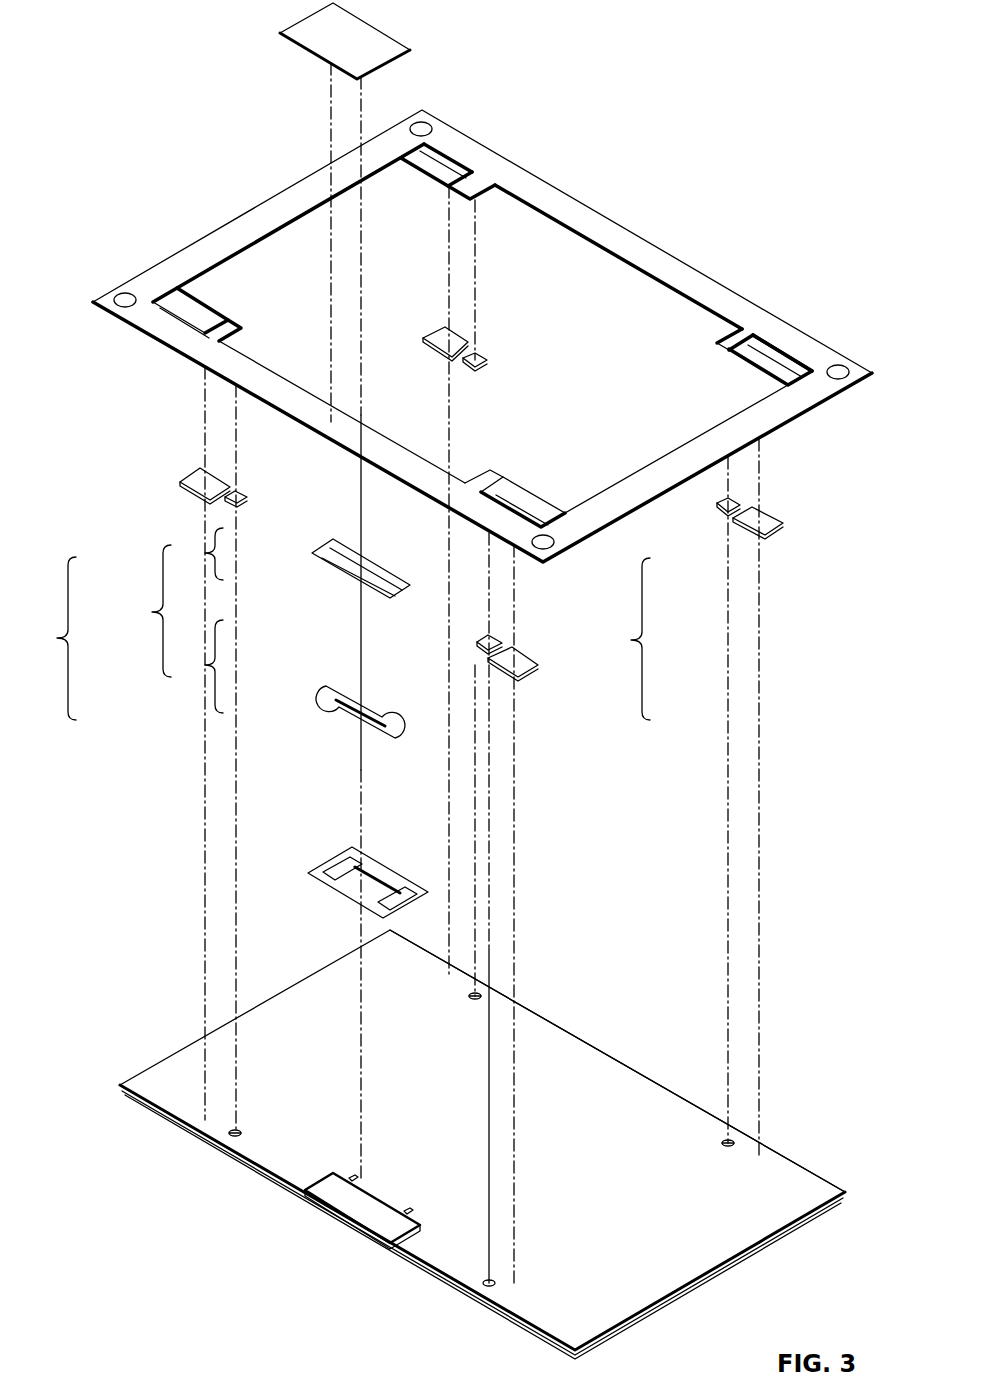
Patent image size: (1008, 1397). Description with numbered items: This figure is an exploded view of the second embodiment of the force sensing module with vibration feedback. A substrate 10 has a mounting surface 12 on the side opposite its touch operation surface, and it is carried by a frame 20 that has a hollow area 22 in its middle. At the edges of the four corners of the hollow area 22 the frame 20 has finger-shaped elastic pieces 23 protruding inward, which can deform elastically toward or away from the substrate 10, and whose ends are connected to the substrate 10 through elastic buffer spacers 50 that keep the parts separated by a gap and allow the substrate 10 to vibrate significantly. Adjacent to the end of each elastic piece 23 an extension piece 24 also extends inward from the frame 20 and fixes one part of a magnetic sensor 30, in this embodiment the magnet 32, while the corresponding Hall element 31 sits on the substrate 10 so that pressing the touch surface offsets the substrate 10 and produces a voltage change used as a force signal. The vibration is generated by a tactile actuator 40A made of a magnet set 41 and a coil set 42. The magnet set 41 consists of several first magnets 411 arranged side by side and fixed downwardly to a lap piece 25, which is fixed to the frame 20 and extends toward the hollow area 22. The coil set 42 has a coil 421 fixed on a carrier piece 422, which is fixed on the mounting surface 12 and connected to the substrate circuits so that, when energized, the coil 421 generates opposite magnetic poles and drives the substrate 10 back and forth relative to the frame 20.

The substrate 10 is at (150, 1110).
The mounting surface 12 is at (787, 1182).
The frame 20 is at (633, 250).
The hollow area 22 is at (258, 287).
The elastic piece 23 is at (440, 170).
The extension piece 24 is at (482, 190).
The lap piece 25 is at (308, 38).
The magnetic sensor 30 is at (336, 638).
The Hall element 31 is at (236, 800).
The magnet 32 is at (200, 480).
The tactile actuator 40A is at (136, 611).
The magnet set 41 is at (199, 554).
The first magnet 411 is at (333, 546).
The coil set 42 is at (199, 666).
The coil 421 is at (333, 683).
The carrier piece 422 is at (325, 867).
The buffer spacer 50 is at (780, 523).